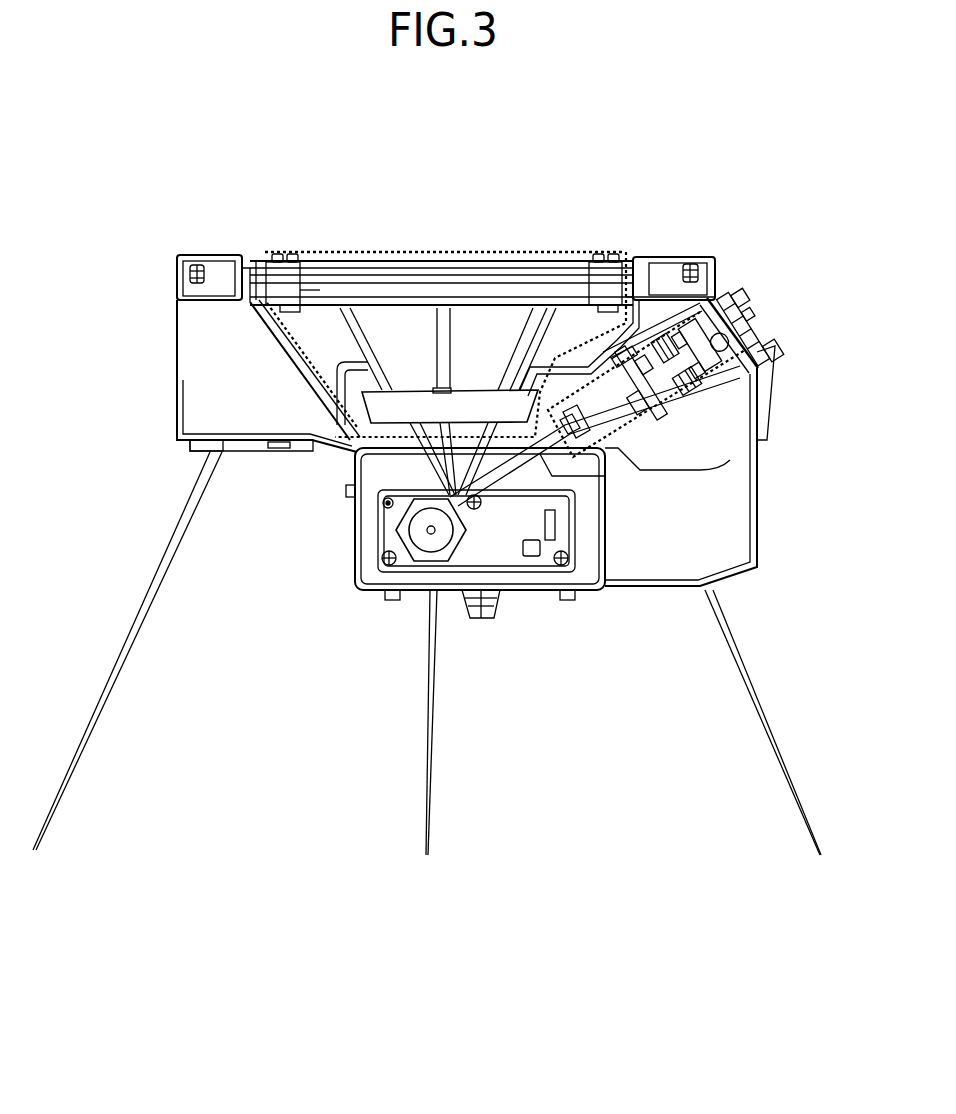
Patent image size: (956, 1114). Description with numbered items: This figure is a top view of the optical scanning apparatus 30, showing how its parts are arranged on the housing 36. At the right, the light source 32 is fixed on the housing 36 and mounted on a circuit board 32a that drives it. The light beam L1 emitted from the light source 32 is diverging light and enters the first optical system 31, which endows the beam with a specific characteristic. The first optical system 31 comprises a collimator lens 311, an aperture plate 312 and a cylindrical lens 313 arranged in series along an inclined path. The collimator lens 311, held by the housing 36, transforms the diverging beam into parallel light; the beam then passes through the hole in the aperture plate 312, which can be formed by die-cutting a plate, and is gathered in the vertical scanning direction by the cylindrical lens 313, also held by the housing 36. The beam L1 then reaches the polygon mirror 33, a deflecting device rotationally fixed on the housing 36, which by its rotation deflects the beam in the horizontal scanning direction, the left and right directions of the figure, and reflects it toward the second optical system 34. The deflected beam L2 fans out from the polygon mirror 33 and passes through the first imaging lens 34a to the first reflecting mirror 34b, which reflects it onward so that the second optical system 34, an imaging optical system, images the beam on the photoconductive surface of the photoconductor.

The optical scanning apparatus 30 is at (708, 228).
The first optical system 31 is at (668, 325).
The collimator lens 311 is at (720, 368).
The aperture plate 312 is at (644, 405).
The cylindrical lens 313 is at (605, 468).
The light source 32 is at (748, 330).
The circuit board 32a is at (745, 320).
The polygon mirror 33 is at (418, 558).
The second optical system 34 is at (378, 253).
The first imaging lens 34a is at (390, 405).
The first reflecting mirror 34b is at (472, 296).
The housing 36 is at (728, 535).
The light beam L1 is at (515, 463).
The light beam L2 is at (350, 330).